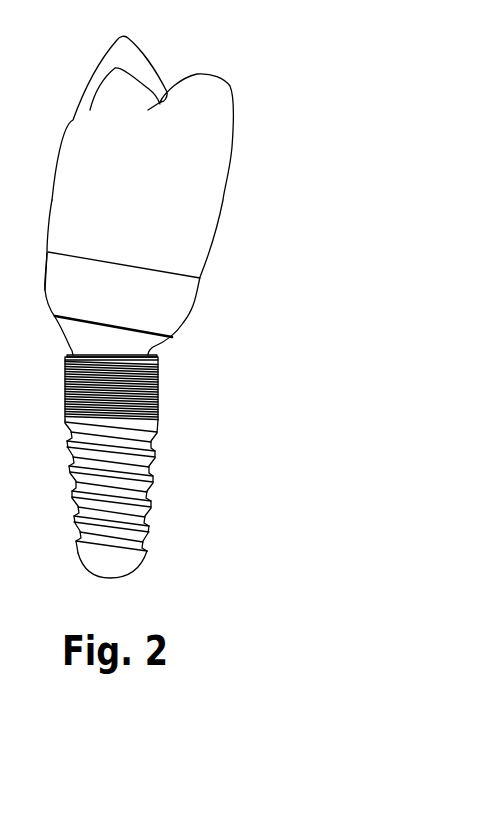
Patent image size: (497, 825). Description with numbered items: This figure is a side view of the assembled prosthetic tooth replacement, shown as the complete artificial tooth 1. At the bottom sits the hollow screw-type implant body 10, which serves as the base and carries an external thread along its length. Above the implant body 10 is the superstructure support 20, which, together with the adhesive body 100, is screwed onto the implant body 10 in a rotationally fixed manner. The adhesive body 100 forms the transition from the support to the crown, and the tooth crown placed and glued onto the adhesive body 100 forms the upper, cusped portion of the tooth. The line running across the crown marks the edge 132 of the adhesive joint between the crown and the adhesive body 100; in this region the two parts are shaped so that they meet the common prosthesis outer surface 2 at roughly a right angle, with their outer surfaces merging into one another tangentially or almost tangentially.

The artificial tooth 1 is at (240, 93).
The prosthesis outer surface 2 is at (185, 165).
The edge of the adhesive joint 132 is at (183, 278).
The adhesive body 100 is at (193, 312).
The superstructure support 20 is at (158, 348).
The implant body 10 is at (162, 464).